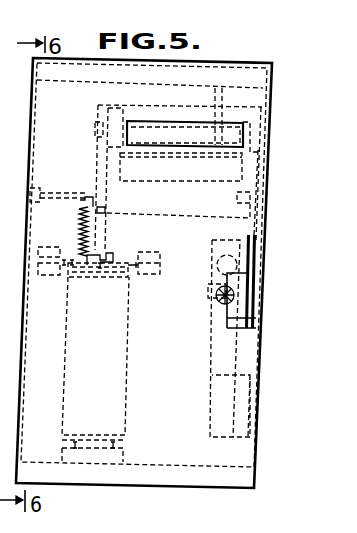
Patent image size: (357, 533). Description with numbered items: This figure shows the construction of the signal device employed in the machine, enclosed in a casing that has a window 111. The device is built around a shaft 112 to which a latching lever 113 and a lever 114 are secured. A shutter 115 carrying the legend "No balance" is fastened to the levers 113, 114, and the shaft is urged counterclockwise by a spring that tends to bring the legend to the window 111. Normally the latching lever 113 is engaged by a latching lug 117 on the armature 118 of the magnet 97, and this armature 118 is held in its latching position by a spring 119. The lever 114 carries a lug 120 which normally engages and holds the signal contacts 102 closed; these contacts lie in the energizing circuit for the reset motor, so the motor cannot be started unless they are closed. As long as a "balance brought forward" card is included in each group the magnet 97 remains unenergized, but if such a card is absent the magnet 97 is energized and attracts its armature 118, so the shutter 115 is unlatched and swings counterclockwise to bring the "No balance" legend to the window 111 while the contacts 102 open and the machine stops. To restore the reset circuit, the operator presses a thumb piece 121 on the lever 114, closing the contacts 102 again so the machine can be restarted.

The magnet 97 is at (118, 352).
The signal contacts 102 is at (221, 297).
The window 111 is at (227, 122).
The shaft 112 is at (95, 125).
The latching lever 113 is at (98, 167).
The lever 114 is at (262, 213).
The shutter 115 is at (245, 172).
The latching lug 117 is at (107, 258).
The armature 118 is at (105, 272).
The spring 119 is at (107, 207).
The lug 120 is at (250, 248).
The thumb piece 121 is at (258, 318).